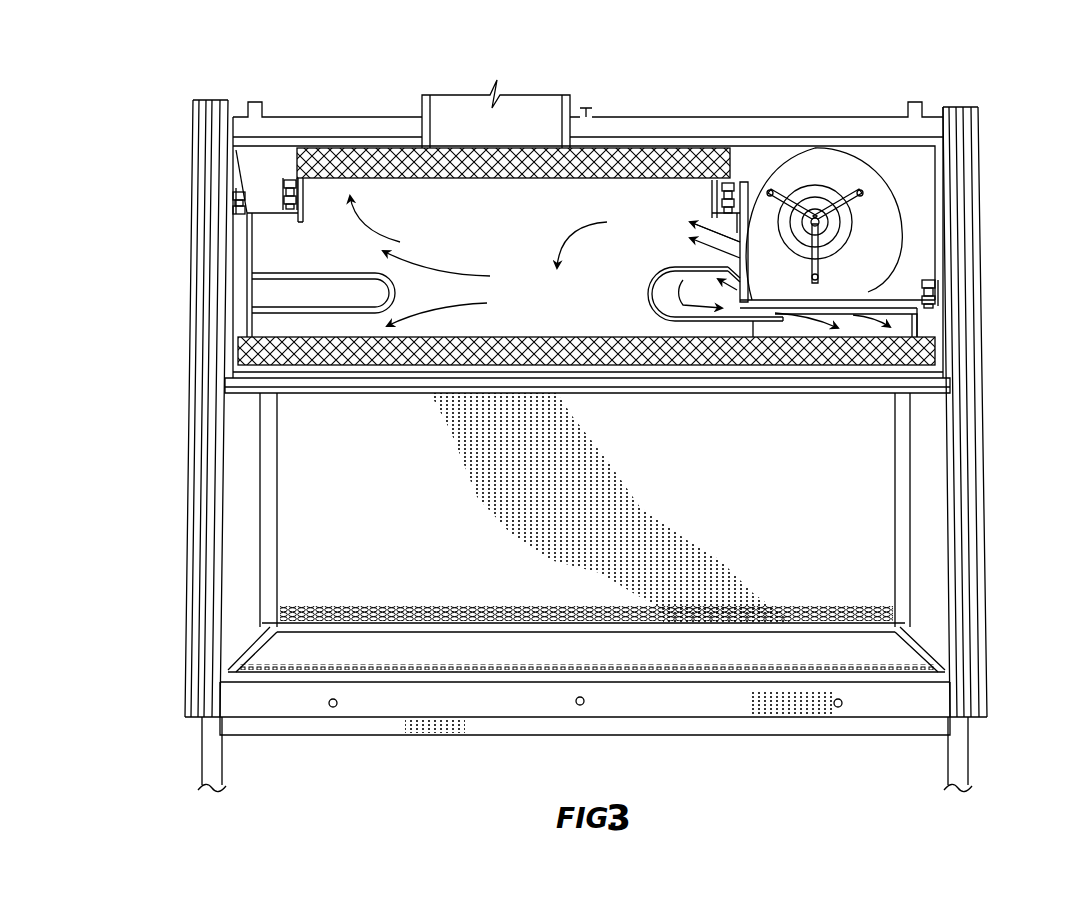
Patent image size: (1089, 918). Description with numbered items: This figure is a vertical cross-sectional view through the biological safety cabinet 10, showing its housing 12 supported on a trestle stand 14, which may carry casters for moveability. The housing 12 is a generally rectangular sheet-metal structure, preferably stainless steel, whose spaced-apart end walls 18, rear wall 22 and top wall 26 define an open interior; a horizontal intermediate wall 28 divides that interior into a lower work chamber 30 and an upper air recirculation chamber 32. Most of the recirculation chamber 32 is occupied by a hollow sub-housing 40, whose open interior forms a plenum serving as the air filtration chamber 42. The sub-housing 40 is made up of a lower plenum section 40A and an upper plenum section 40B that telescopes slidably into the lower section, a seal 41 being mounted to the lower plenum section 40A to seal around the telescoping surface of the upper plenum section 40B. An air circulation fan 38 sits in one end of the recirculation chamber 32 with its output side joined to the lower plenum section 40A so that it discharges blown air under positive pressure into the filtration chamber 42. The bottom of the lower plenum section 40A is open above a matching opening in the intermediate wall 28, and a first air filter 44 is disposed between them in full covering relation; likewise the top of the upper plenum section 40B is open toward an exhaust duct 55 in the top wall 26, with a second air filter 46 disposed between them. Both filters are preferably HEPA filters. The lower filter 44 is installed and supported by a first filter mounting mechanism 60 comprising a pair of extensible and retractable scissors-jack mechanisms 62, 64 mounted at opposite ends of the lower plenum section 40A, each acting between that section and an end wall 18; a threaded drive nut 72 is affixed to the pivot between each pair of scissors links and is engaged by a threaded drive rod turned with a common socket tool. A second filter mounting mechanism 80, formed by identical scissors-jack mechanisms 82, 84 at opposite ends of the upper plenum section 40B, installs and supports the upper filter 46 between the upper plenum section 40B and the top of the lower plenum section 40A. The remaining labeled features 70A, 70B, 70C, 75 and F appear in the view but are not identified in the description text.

The biological safety cabinet 10 is at (432, 780).
The housing 12 is at (963, 742).
The trestle stand 14 is at (210, 760).
The end walls 18 is at (205, 535).
The rear wall 22 is at (716, 501).
The top wall 26 is at (290, 137).
The horizontal intermediate wall 28 is at (690, 380).
The lower work chamber 30 is at (305, 573).
The upper air recirculation chamber 32 is at (897, 163).
The air circulation fan 38 is at (890, 227).
The sub-housing 40 is at (902, 303).
The lower plenum section 40A is at (250, 298).
The upper plenum section 40B is at (302, 192).
The seal 41 is at (781, 193).
The air filtration chamber 42 is at (466, 243).
The first air filter 44 is at (493, 337).
The second air filter 46 is at (383, 178).
The exhaust duct 55 is at (420, 105).
The first filter mounting mechanism 60 is at (234, 200).
The scissors-jack mechanism 62 is at (237, 222).
The scissors-jack mechanism 64 is at (935, 290).
The first air outlet flow 70A is at (673, 267).
The second air duct 70B is at (750, 330).
The U-shaped air duct 70C is at (649, 293).
The threaded drive nut 72 is at (315, 272).
The fan wheel 75 is at (803, 200).
The second filter mounting mechanism 80 is at (287, 170).
The scissors-jack mechanism 82 is at (282, 183).
The scissors-jack mechanism 84 is at (733, 181).
The air flow F is at (703, 177).